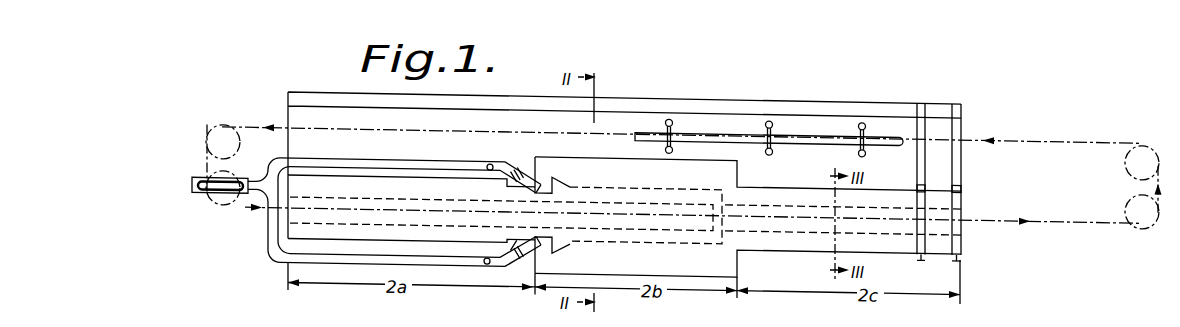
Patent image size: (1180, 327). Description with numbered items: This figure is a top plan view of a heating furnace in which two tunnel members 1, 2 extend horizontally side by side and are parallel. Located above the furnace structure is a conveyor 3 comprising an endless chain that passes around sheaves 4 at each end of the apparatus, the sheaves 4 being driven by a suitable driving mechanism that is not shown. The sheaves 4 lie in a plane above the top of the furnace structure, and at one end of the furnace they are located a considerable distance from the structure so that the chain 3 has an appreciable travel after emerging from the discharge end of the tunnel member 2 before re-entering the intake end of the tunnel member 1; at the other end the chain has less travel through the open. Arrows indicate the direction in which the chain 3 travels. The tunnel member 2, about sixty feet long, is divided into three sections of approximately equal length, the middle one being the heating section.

The tunnel member 1 is at (880, 131).
The tunnel member 2 is at (893, 244).
The conveyor 3 is at (1023, 141).
The sheaves 4 is at (222, 198).